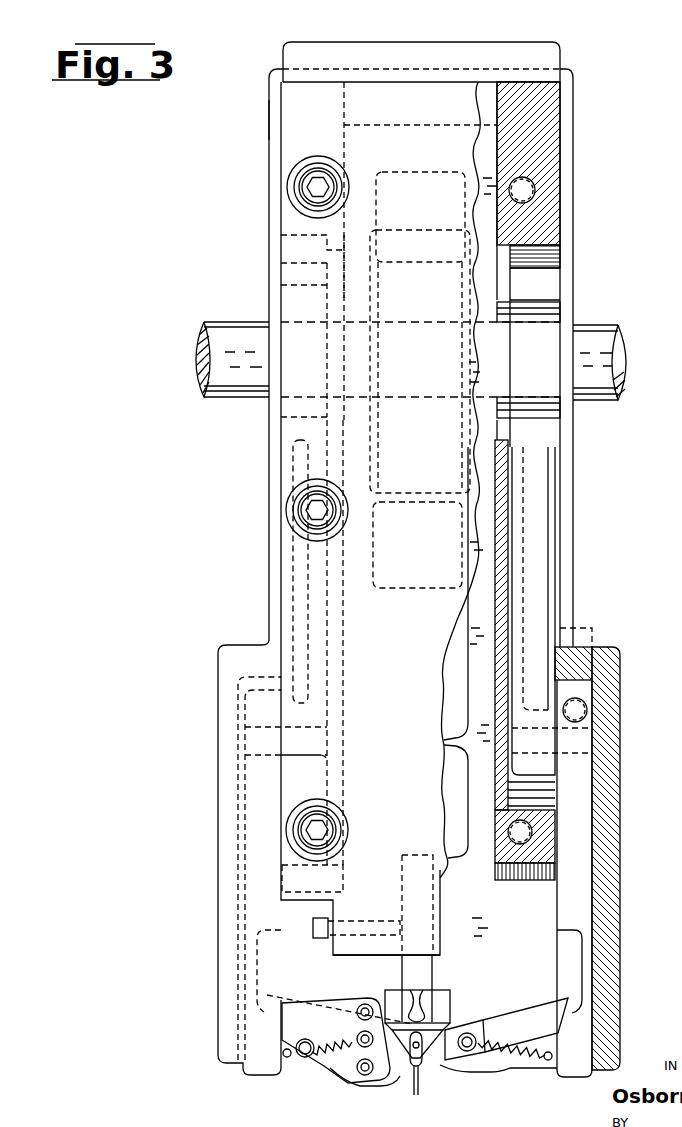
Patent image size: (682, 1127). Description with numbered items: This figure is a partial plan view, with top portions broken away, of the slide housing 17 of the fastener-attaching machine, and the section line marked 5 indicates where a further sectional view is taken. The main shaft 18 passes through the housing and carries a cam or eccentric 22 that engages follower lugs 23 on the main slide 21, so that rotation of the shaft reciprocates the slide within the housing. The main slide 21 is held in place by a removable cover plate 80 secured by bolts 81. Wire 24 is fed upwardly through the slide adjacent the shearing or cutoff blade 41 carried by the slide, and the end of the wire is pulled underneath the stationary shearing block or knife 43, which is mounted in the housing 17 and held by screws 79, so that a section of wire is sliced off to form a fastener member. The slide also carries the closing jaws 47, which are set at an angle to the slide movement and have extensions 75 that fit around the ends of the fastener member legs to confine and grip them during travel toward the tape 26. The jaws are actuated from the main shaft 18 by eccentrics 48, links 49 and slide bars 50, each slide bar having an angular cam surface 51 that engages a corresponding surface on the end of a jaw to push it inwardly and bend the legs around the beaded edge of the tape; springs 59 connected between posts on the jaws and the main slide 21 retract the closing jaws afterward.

The section line 5- 5 is at (557, 62).
The slide housing 17 is at (573, 432).
The main shaft 18 is at (623, 342).
The main slide 21 is at (492, 125).
The cam or eccentric 22 is at (428, 495).
The follower lugs 23 is at (410, 172).
The wire 24 is at (434, 1010).
The tape 26 is at (416, 1100).
The shearing or cutoff blade 41 is at (445, 1020).
The stationary shearing block or knife 43 is at (402, 968).
The closing jaws 47 is at (334, 1007).
The eccentrics 48 is at (294, 266).
The links 49 is at (293, 553).
The slide bars 50 is at (595, 782).
The angular cam surface 51 is at (257, 980).
The springs 59 is at (326, 1050).
The extensions 75 is at (419, 1066).
The screws 79 is at (373, 920).
The cover plate 80 is at (269, 122).
The bolts 81 is at (296, 183).